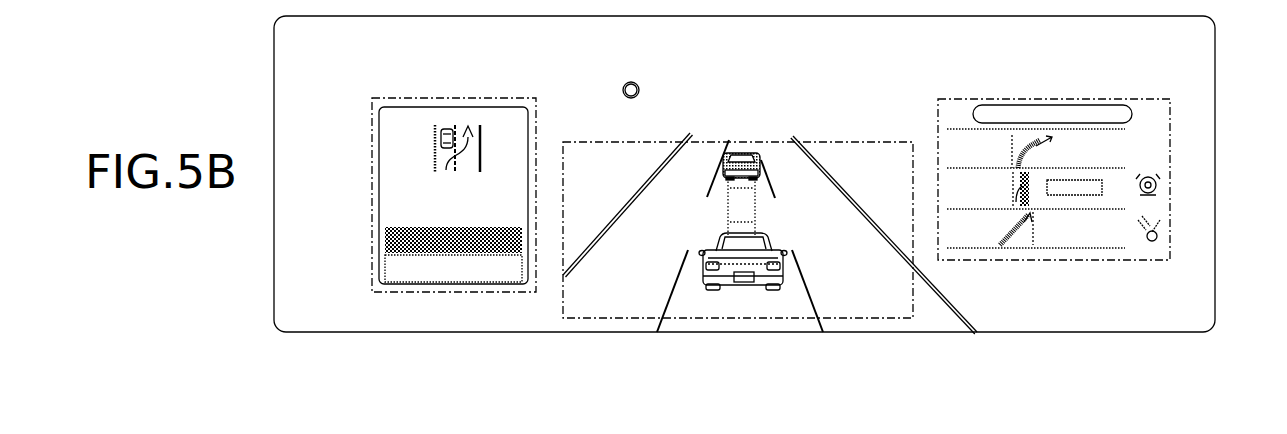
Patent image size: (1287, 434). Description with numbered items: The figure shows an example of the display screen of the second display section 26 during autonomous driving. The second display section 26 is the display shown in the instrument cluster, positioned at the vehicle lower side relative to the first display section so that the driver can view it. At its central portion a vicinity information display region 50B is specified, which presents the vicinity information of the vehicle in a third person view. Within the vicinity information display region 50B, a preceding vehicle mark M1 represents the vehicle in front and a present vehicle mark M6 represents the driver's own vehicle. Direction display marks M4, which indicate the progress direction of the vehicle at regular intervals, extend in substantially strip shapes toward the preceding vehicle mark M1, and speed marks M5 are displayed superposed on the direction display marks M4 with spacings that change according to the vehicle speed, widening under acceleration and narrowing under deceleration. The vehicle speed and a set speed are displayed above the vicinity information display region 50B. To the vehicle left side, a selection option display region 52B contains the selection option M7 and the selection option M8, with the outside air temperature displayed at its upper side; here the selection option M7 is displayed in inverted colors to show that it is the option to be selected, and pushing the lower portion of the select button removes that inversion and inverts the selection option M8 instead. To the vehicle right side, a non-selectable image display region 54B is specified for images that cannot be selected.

The second display section 26 is at (1185, 290).
The vicinity information display region 50B is at (845, 142).
The selection option display region 52B is at (429, 245).
The non-selectable image display region 54B is at (1170, 142).
The preceding vehicle mark M1 is at (722, 173).
The direction display marks M4 is at (722, 210).
The speed marks M5 is at (735, 221).
The present vehicle mark M6 is at (742, 287).
The selection option M7 is at (440, 227).
The selection option M8 is at (483, 270).